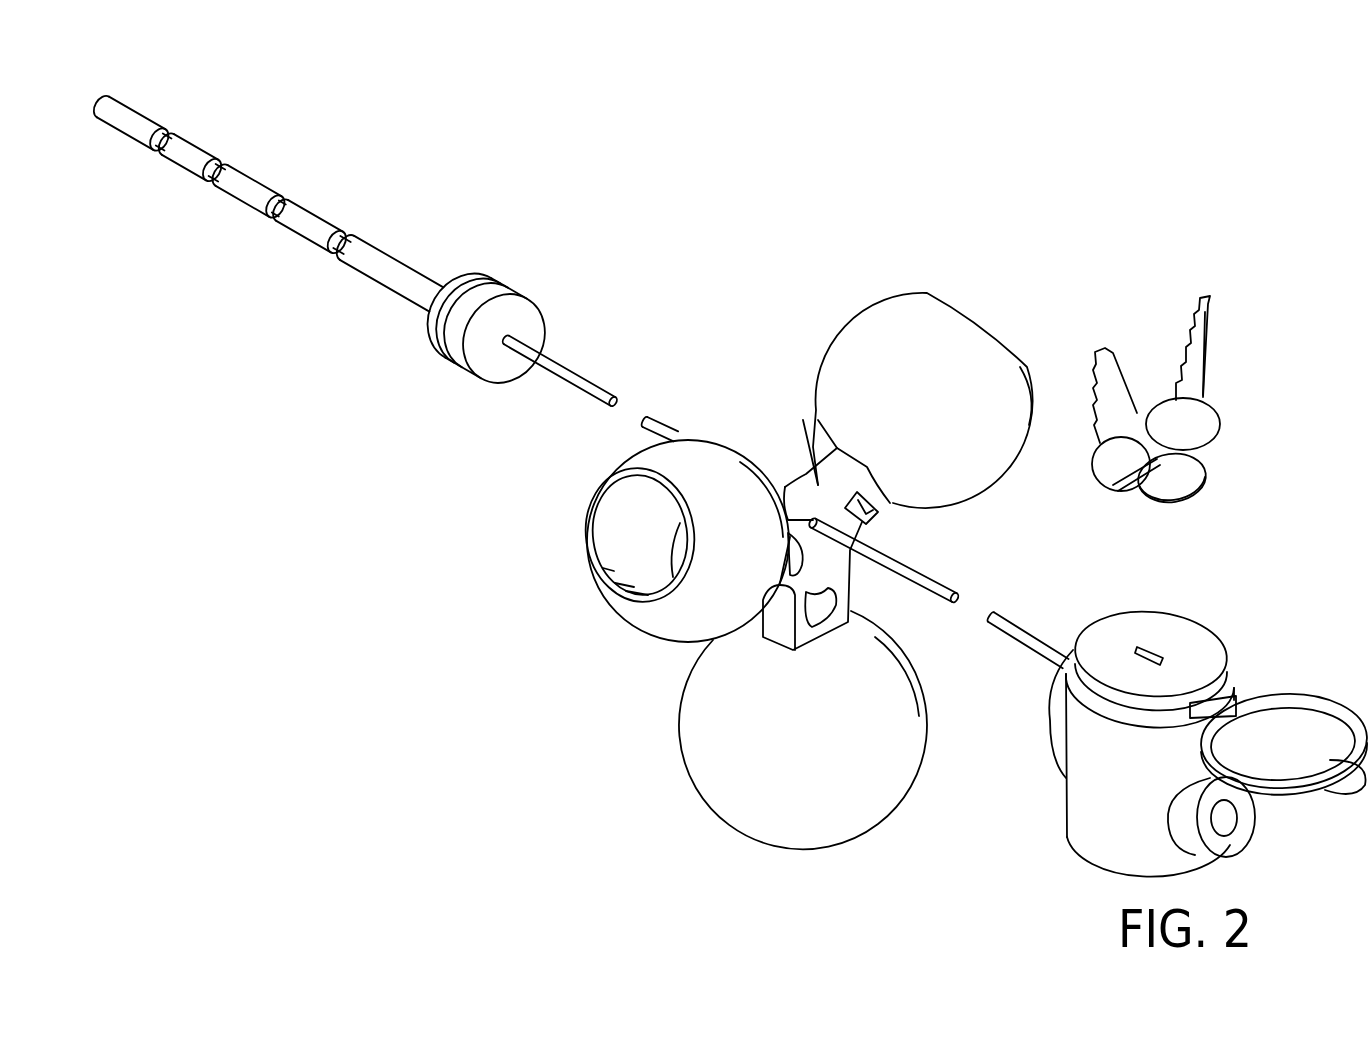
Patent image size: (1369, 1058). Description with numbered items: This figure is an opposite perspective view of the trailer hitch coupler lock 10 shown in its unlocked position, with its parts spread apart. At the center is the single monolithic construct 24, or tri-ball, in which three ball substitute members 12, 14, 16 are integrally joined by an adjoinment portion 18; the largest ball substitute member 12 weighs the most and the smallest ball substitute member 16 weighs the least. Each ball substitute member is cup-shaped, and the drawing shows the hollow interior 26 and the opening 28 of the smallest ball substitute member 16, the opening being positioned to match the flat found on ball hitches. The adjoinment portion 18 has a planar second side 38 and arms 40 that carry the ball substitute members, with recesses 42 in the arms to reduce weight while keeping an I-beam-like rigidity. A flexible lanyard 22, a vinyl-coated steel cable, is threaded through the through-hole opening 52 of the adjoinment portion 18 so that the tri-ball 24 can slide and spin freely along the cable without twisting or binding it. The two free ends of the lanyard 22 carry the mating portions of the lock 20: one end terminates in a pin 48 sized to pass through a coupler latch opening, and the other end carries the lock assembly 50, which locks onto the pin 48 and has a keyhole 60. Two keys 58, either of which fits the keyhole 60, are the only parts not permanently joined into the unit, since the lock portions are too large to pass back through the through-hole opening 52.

The trailer hitch coupler lock 10 is at (948, 112).
The ball substitute member 12 is at (700, 740).
The ball substitute member 14 is at (915, 318).
The ball substitute member 16 is at (646, 551).
The adjoinment portion 18 is at (861, 601).
The lock 20 is at (1249, 548).
The flexible lanyard 22 is at (675, 418).
The monolithic construct 24 is at (768, 298).
The hollow interior 26 is at (657, 553).
The opening 28 is at (608, 580).
The second side 38 is at (843, 570).
The arm 40 is at (830, 627).
The recess 42 is at (883, 525).
The pin 48 is at (310, 235).
The lock assembly 50 is at (1177, 716).
The through-hole opening 52 is at (805, 487).
The keys 58 is at (1197, 418).
The keyhole 60 is at (1143, 650).